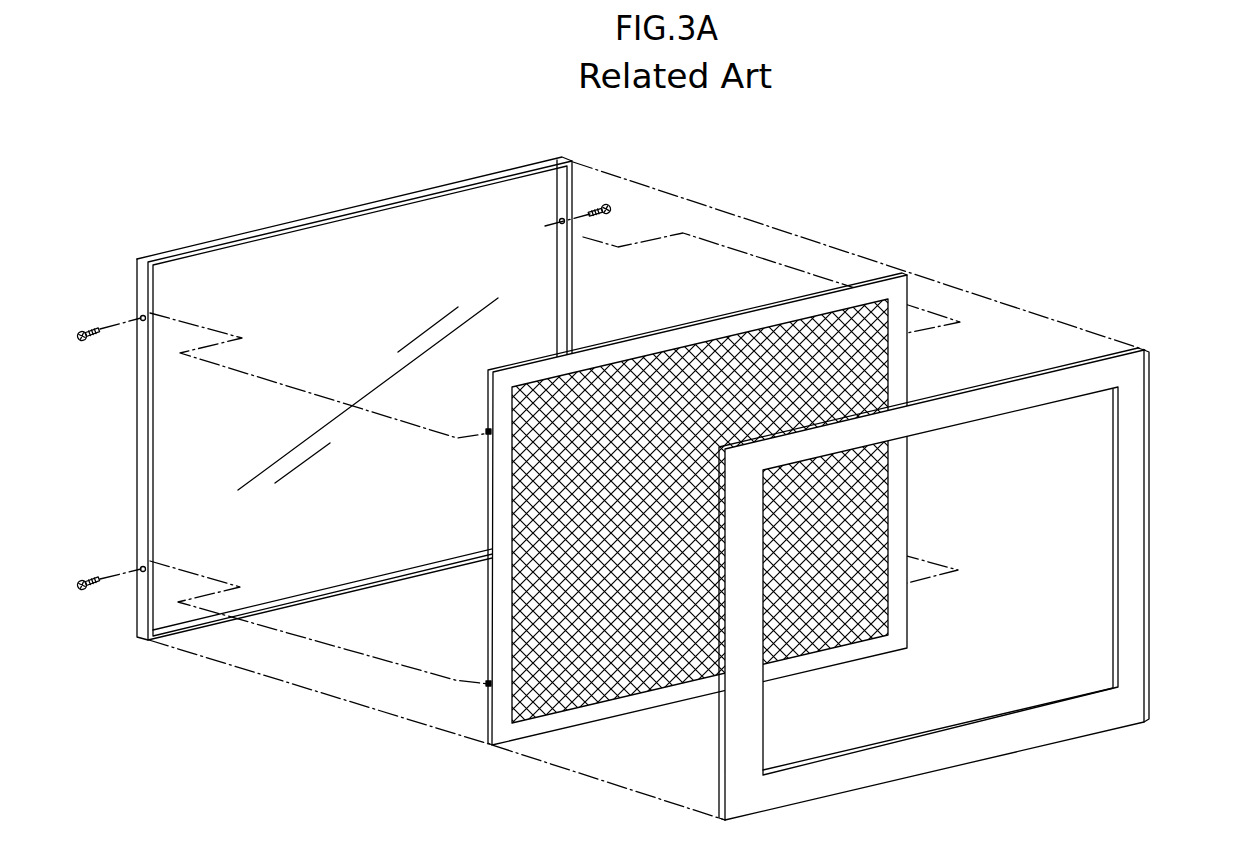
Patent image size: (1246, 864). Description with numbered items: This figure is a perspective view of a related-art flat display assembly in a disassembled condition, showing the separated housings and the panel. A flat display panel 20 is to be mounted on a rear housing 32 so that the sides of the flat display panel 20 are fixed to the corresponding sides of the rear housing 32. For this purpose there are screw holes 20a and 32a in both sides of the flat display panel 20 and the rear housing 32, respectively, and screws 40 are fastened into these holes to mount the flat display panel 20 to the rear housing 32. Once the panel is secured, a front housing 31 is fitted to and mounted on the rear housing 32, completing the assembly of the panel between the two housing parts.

The flat display panel 20 is at (906, 276).
The screw holes 20a is at (488, 685).
The front housing 31 is at (1146, 386).
The rear housing 32 is at (458, 181).
The screw holes 32a is at (141, 317).
The screws 40 is at (80, 342).